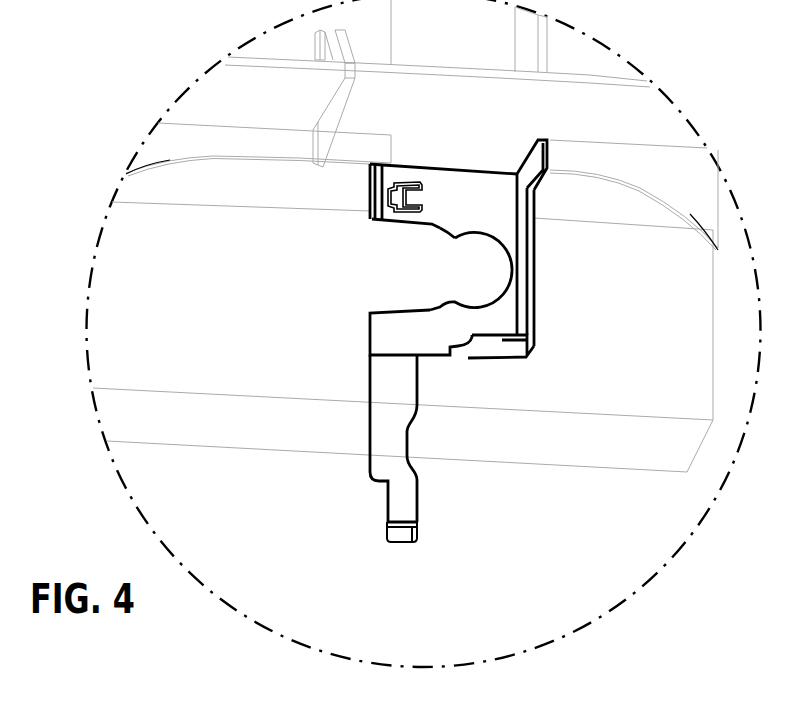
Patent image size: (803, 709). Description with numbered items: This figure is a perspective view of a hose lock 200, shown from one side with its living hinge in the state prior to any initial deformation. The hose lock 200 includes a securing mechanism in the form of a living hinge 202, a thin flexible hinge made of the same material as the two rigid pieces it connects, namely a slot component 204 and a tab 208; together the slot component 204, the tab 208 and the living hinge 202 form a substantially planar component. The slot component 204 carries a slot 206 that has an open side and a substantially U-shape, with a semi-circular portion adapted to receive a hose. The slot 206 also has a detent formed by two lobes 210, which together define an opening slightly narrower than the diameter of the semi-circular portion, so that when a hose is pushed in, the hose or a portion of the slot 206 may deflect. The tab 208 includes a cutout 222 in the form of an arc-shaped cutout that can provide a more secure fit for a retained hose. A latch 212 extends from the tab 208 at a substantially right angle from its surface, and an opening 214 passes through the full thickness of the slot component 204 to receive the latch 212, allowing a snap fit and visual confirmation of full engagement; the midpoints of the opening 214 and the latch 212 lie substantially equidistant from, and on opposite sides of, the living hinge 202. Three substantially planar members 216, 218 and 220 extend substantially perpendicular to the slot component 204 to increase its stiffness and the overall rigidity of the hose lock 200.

The hose lock 200 is at (412, 359).
The living hinge 202 is at (417, 360).
The slot component 204 is at (498, 317).
The slot 206 is at (438, 273).
The tab 208 is at (382, 462).
The lobes 210 is at (450, 222).
The latch 212 is at (387, 533).
The opening 214 is at (420, 194).
The member 216 is at (534, 263).
The member 218 is at (537, 342).
The member 220 is at (370, 192).
The cutout 222 is at (420, 437).